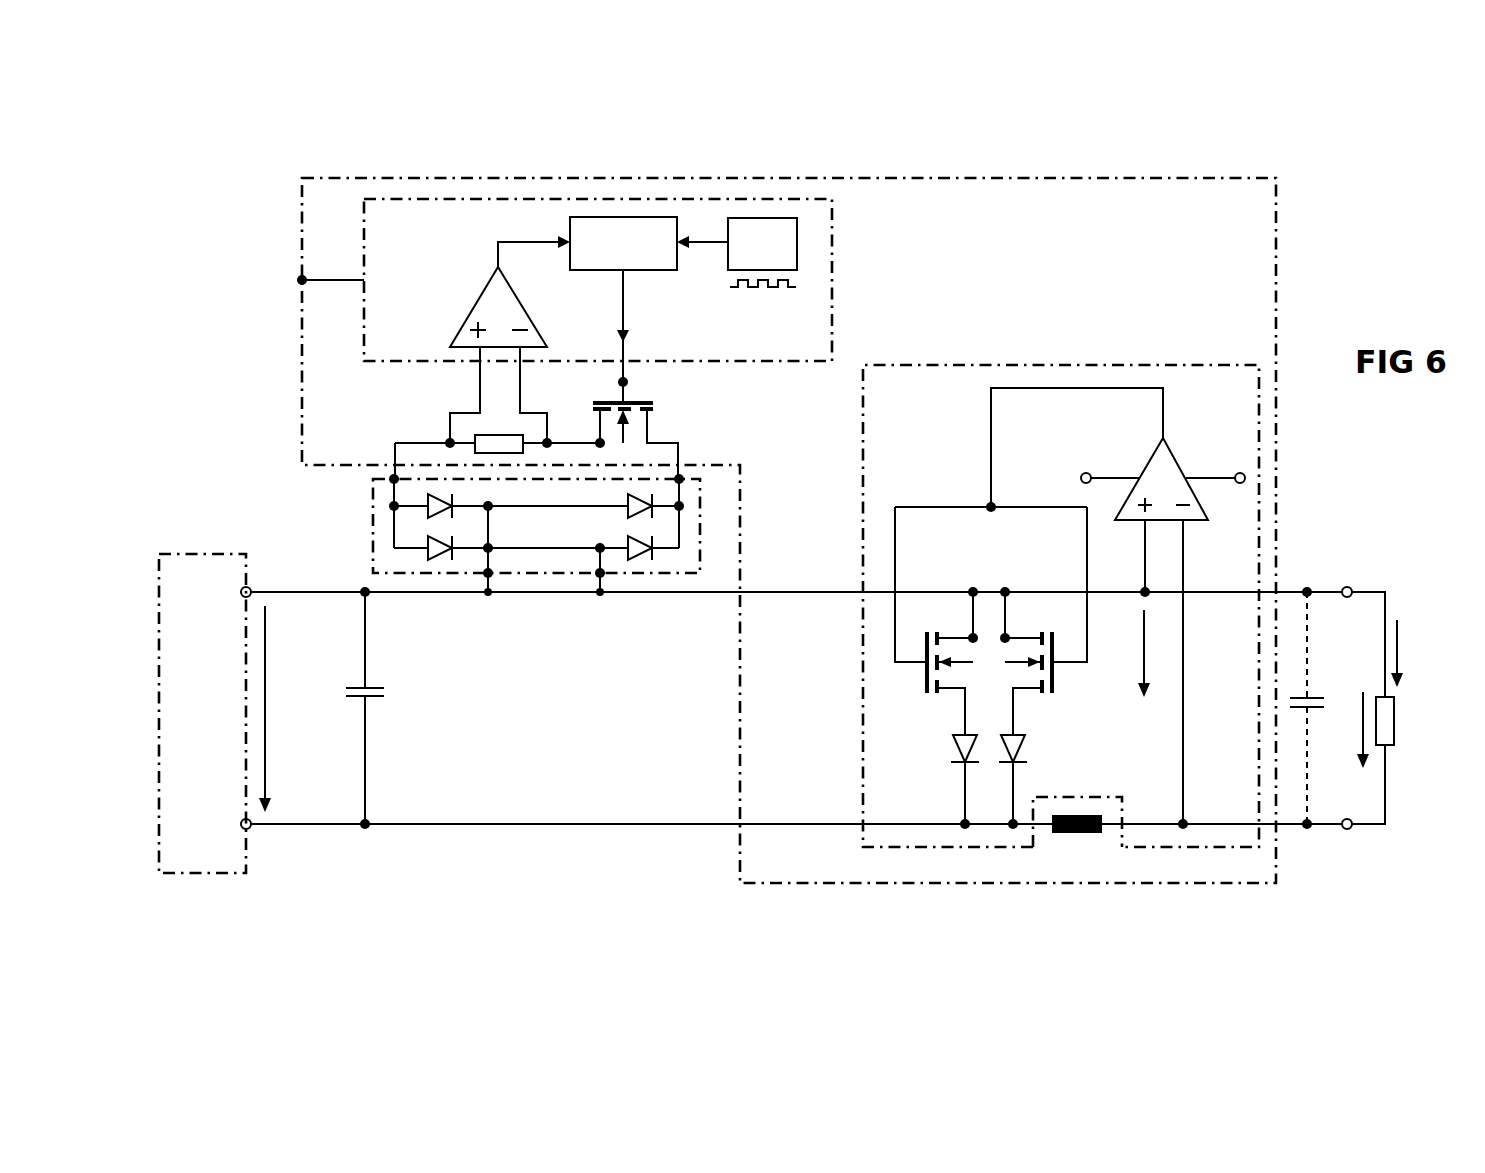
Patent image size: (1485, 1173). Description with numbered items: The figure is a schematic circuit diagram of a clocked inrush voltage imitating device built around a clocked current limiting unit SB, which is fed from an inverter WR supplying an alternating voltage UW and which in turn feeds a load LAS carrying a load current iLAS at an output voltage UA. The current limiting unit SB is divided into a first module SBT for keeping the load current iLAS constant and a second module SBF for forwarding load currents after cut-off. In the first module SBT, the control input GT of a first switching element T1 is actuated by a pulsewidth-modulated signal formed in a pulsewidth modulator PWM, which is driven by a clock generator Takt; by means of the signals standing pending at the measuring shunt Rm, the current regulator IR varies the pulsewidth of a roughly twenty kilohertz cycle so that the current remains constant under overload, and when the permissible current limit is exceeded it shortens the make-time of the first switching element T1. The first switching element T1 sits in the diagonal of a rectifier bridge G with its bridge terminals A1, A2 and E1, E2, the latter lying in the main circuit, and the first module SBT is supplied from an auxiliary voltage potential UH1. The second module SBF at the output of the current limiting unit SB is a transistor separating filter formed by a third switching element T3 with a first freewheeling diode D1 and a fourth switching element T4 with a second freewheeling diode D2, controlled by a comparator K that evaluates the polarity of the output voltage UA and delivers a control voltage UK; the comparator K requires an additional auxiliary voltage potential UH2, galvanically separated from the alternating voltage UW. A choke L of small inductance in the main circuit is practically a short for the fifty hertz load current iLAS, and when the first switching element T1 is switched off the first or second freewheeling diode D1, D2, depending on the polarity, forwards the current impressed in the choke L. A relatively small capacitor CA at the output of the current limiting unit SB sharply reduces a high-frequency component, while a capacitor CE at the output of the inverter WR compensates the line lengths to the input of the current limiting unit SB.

The current limiting unit SB is at (1278, 262).
The first module SBT is at (834, 288).
The second module SBF is at (1064, 365).
The auxiliary voltage potential UH1 is at (301, 280).
The current regulator IR is at (472, 303).
The pulsewidth modulator PWM is at (608, 272).
The clock generator Takt is at (745, 274).
The control input GT is at (605, 336).
The first switching element T1 is at (655, 406).
The measuring shunt Rm is at (473, 441).
The rectifier bridge G is at (536, 535).
The bridge output terminal A1 is at (392, 481).
The bridge output terminal A2 is at (681, 481).
The bridge input terminal E1 is at (490, 576).
The bridge input terminal E2 is at (598, 576).
The inverter WR is at (191, 554).
The alternating voltage UW is at (268, 755).
The capacitor CE is at (372, 688).
The comparator K is at (1051, 608).
The additional auxiliary voltage potential UH2 is at (1210, 478).
The third switching element T3 is at (928, 696).
The fourth switching element T4 is at (1050, 696).
The first freewheeling diode D1 is at (955, 752).
The second freewheeling diode D2 is at (1023, 752).
The comparator voltage UK is at (1147, 652).
The choke L is at (1085, 835).
The capacitor CA is at (1310, 698).
The load LAS is at (1396, 722).
The load current iLAS is at (1400, 648).
The output voltage UA is at (1360, 712).